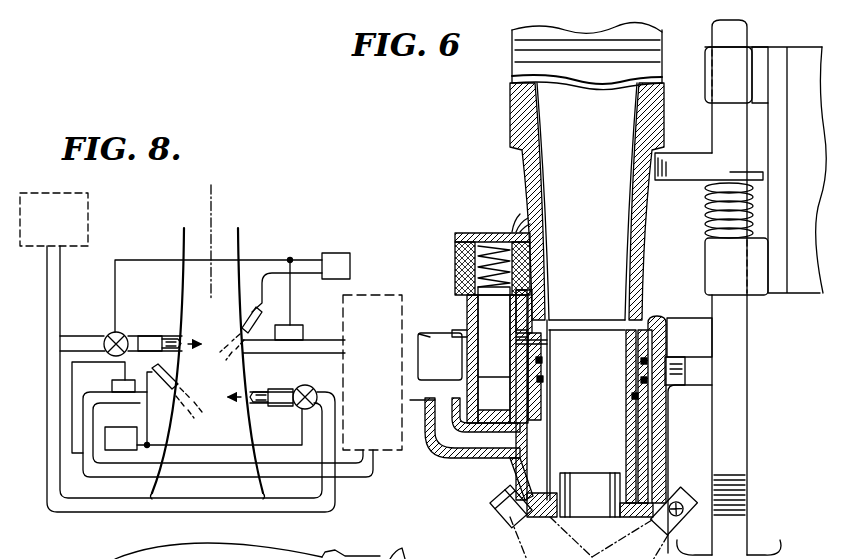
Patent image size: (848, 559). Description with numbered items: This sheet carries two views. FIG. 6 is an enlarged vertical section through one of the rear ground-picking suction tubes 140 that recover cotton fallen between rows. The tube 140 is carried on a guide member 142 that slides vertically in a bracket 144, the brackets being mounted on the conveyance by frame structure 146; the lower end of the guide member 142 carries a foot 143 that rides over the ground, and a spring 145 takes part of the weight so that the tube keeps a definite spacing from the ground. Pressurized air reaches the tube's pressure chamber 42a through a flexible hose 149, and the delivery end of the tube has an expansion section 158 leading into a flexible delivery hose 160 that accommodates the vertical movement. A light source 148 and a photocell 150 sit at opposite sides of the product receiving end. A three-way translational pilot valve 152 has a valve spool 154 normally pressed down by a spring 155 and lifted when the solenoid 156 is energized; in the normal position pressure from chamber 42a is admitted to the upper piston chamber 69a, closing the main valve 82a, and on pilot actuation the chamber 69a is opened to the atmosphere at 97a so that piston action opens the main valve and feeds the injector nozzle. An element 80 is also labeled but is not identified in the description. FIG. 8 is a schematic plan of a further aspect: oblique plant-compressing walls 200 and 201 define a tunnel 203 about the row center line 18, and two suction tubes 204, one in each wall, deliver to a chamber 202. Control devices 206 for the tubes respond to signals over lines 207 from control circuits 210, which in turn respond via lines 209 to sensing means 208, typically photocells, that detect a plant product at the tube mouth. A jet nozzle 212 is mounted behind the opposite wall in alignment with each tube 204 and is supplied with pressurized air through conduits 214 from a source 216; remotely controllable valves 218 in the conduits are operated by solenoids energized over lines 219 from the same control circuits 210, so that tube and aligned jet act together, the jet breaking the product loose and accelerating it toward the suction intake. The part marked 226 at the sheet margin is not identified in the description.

In FIG. 8, the center line 18 is at (213, 208).
In FIG. 8, the plant-compressing wall 200 is at (262, 494).
In FIG. 8, the plant-compressing wall 201 is at (157, 494).
In FIG. 8, the chamber 202 is at (377, 452).
In FIG. 8, the tunnel 203 is at (215, 466).
In FIG. 8, the suction tube 204 is at (318, 338).
In FIG. 8, the control device 206 is at (296, 325).
In FIG. 8, the line 207 is at (308, 259).
In FIG. 8, the sensing means 208 is at (243, 315).
In FIG. 8, the line 209 is at (260, 279).
In FIG. 8, the control circuit 210 is at (350, 262).
In FIG. 8, the jet nozzle 212 is at (172, 335).
In FIG. 8, the conduit 214 is at (47, 407).
In FIG. 8, the pressurized fluid source 216 is at (60, 229).
In FIG. 8, the remotely controllable valve 218 is at (108, 337).
In FIG. 8, the line 219 is at (163, 245).
In FIG. 8, the container bottom 226 is at (350, 558).
In FIG. 6, the suction tube pressure chamber 42a is at (527, 467).
In FIG. 6, the upper piston chamber 69a is at (531, 348).
In FIG. 6, the nozzle body 80 is at (552, 448).
In FIG. 6, the main valve 82a is at (557, 493).
In FIG. 6, the atmospheric vent 97a is at (477, 324).
In FIG. 6, the ground picking suction tube 140 is at (641, 289).
In FIG. 6, the guide member 142 is at (747, 385).
In FIG. 6, the foot 143 is at (783, 551).
In FIG. 6, the bracket 144 is at (760, 296).
In FIG. 6, the spring 145 is at (707, 223).
In FIG. 6, the frame structure 146 is at (803, 294).
In FIG. 6, the light source 148 is at (692, 490).
In FIG. 6, the flexible hose 149 is at (428, 338).
In FIG. 6, the photocell 150 is at (505, 516).
In FIG. 6, the three-way pilot valve 152 is at (462, 306).
In FIG. 6, the valve spool 154 is at (500, 400).
In FIG. 6, the spring 155 is at (499, 235).
In FIG. 6, the solenoid 156 is at (462, 236).
In FIG. 6, the expansion section 158 is at (535, 145).
In FIG. 6, the flexible delivery hose 160 is at (683, 37).